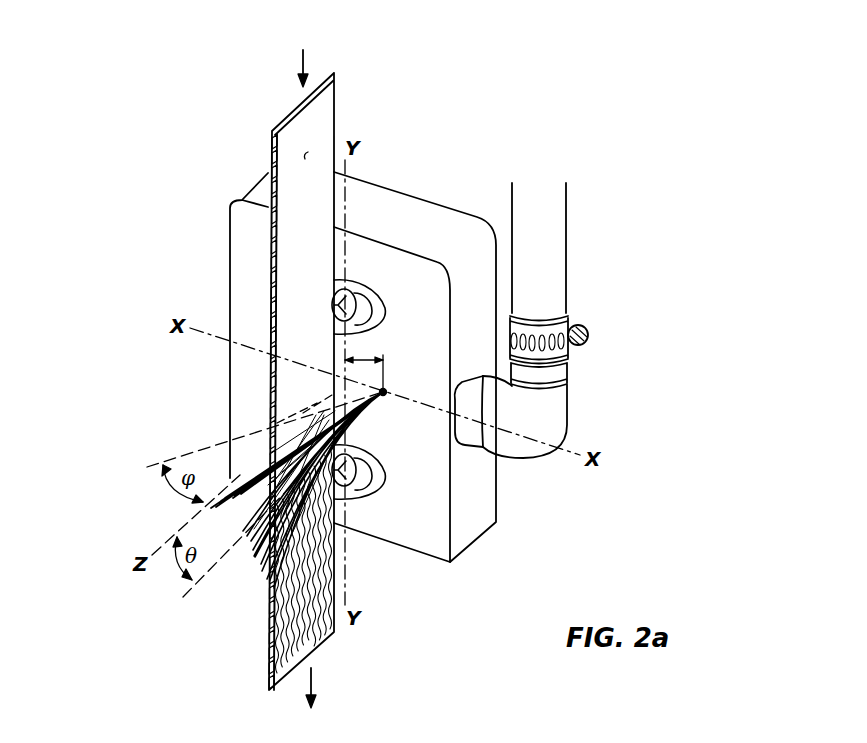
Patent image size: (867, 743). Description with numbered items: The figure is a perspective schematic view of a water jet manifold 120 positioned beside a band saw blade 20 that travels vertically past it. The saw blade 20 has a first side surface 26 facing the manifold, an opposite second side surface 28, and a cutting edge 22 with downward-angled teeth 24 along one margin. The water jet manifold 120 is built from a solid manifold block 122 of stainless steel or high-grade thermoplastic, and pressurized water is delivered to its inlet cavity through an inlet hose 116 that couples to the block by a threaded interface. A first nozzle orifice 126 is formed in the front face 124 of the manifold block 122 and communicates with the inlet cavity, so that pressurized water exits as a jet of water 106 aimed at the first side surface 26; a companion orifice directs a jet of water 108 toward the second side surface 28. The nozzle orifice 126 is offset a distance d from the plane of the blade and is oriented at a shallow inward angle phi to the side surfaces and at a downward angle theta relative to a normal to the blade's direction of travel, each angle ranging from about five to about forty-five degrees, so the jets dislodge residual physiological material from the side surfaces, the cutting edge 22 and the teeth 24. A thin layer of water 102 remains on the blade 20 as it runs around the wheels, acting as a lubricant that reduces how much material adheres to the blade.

The saw blade 20 is at (335, 108).
The cutting edge 22 is at (267, 268).
The teeth 24 is at (267, 610).
The first side surface 26 is at (305, 158).
The second side surface 28 is at (272, 152).
The thin layer of water 102 is at (313, 630).
The jet of water 106 is at (338, 471).
The jet of water 108 is at (257, 462).
The inlet hose 116 is at (567, 277).
The water jet manifold 120 is at (415, 317).
The manifold block 122 is at (477, 487).
The front face 124 is at (413, 503).
The first nozzle orifice 126 is at (387, 394).